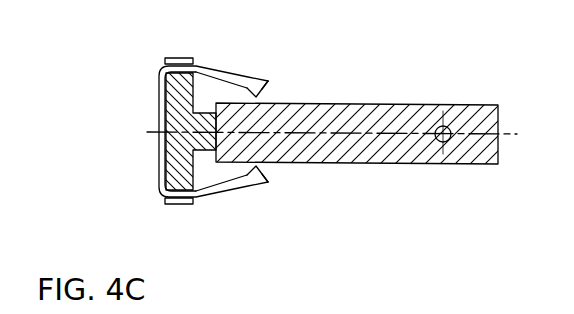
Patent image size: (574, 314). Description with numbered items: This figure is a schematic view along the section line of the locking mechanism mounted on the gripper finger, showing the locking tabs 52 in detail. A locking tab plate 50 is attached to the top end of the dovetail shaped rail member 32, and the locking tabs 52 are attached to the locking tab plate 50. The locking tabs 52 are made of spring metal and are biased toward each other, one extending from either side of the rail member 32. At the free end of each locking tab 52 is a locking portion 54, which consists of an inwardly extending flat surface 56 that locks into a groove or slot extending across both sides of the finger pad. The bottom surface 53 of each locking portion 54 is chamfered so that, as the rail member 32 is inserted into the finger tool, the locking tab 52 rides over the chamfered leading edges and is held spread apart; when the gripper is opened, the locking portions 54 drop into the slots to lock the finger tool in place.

The rail member 32 is at (407, 164).
The locking tab plate 50 is at (175, 108).
The locking tabs 52 is at (216, 69).
The bottom surface 53 is at (266, 92).
The locking portion 54 is at (256, 80).
The inwardly extending flat surface 56 is at (247, 87).